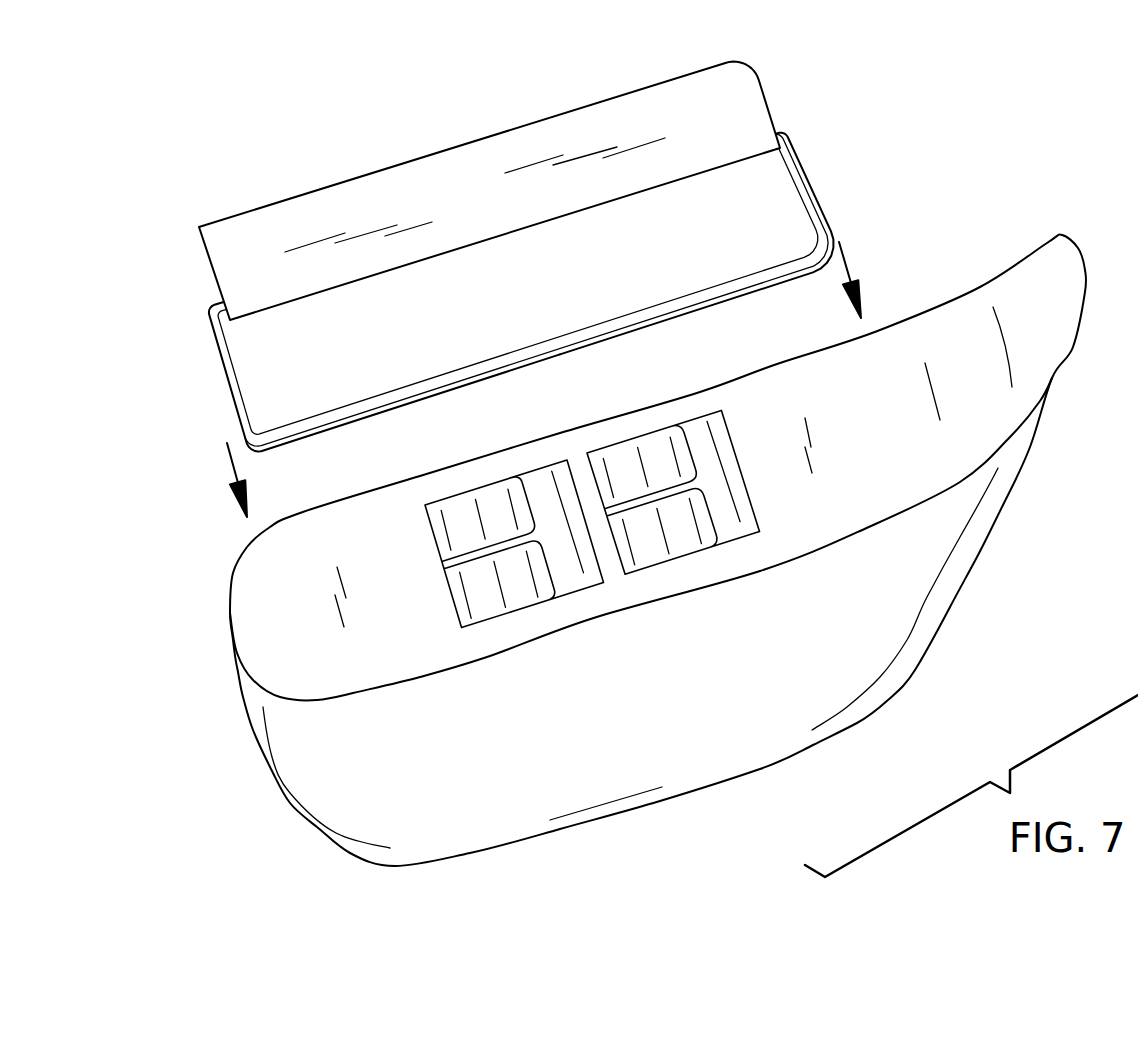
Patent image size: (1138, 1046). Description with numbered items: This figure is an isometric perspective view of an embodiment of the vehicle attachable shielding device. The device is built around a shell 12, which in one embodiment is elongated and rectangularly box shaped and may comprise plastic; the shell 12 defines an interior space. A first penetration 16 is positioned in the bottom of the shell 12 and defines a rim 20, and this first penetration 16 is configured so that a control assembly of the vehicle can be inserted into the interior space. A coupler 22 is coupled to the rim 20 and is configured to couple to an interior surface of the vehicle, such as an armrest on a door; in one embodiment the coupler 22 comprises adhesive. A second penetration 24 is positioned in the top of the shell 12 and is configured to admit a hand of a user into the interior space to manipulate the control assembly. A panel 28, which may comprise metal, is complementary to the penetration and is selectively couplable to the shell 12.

The shell 12 is at (511, 284).
The first penetration 16 is at (413, 336).
The rim 20 is at (683, 340).
The coupler 22 is at (768, 311).
The second penetration 24 is at (300, 358).
The panel 28 is at (458, 172).